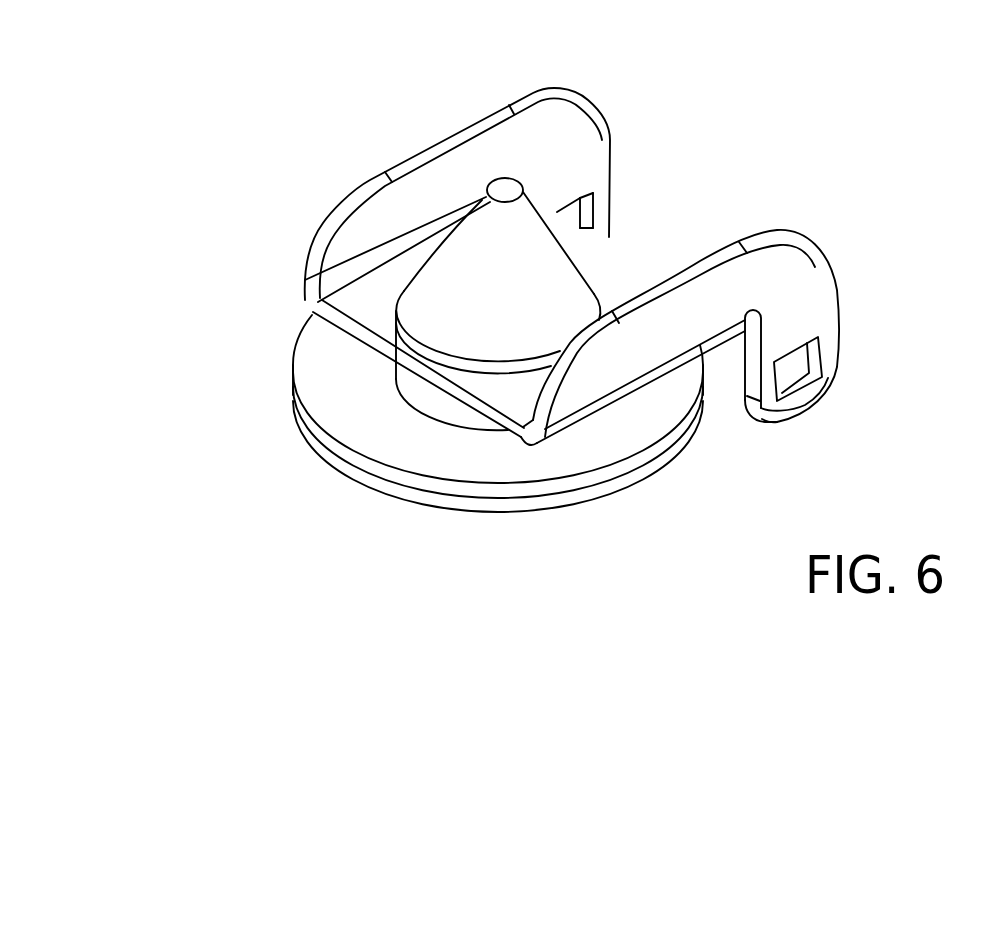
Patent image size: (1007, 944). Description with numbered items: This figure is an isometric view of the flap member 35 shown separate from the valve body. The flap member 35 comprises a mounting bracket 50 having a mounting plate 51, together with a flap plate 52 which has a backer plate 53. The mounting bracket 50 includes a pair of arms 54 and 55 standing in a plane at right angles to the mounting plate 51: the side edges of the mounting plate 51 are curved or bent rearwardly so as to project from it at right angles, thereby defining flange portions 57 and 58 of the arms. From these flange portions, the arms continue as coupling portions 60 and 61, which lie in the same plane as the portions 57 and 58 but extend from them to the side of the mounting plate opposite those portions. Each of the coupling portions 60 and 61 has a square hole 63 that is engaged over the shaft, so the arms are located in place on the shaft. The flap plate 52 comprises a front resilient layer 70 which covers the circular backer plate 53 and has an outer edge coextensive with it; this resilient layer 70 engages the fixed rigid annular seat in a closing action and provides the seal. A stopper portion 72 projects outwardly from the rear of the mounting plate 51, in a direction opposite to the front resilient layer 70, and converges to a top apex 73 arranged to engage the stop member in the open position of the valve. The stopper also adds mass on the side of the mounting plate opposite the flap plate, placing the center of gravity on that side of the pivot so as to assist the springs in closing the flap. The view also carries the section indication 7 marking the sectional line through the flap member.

The section line 7- 7 is at (258, 448).
The flap member 35 is at (647, 136).
The mounting bracket 50 is at (418, 104).
The mounting plate 51 is at (362, 292).
The flap plate 52 is at (342, 444).
The backer plate 53 is at (430, 468).
The arm 54 is at (576, 110).
The arm 55 is at (803, 262).
The flange portion 57 is at (382, 202).
The flange portion 58 is at (618, 367).
The coupling portion 60 is at (604, 146).
The coupling portion 61 is at (832, 313).
The square hole 63 is at (797, 388).
The front resilient layer 70 is at (521, 515).
The stopper portion 72 is at (482, 313).
The top apex 73 is at (500, 197).